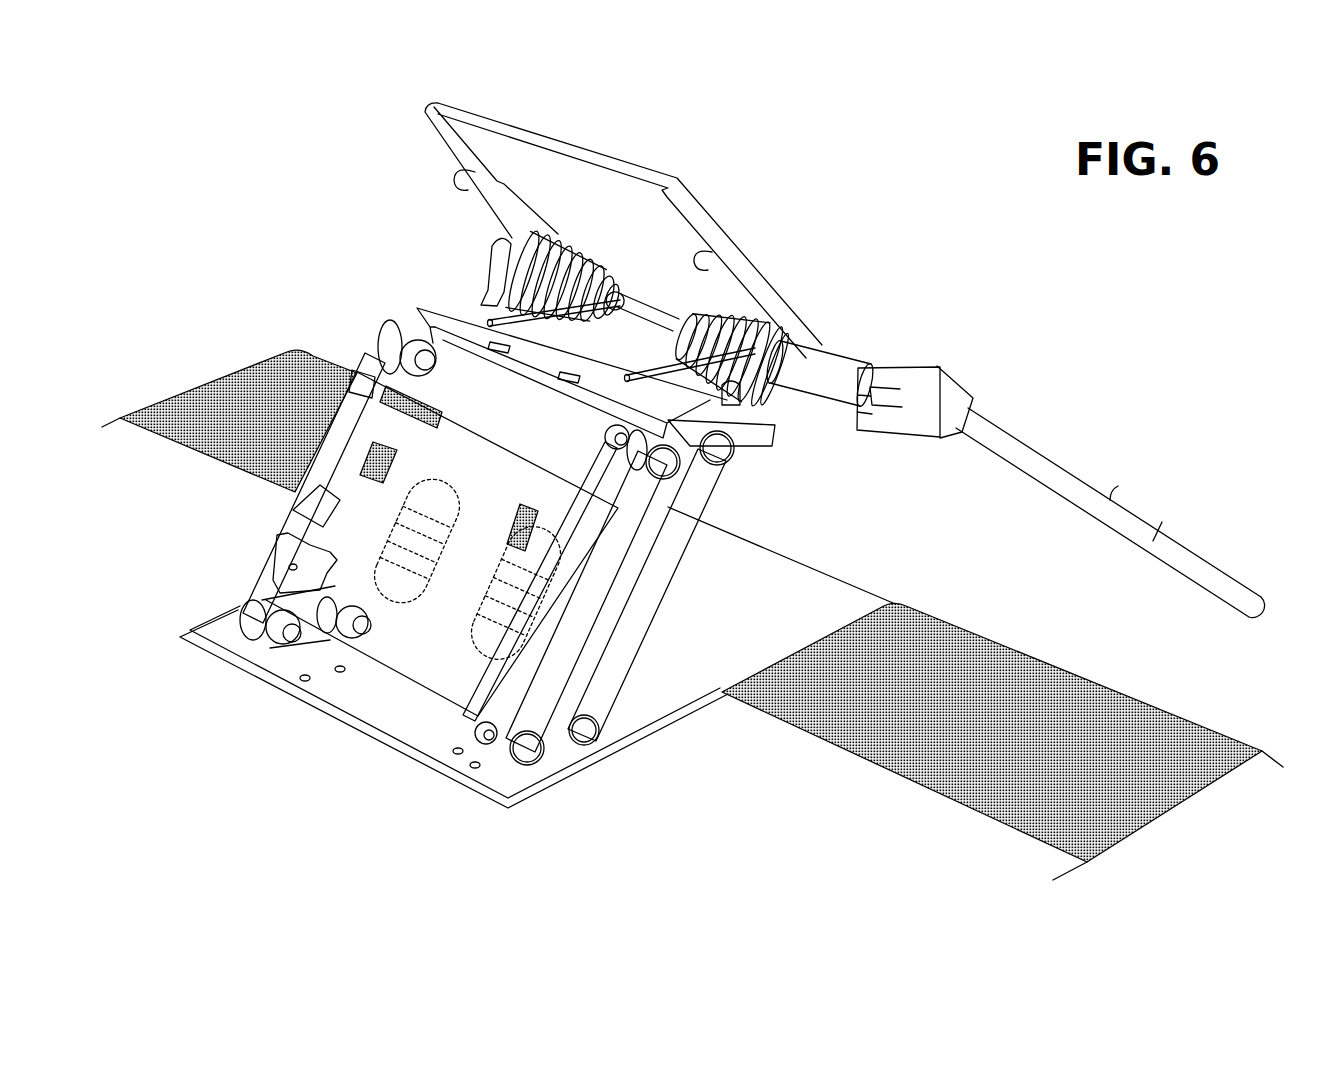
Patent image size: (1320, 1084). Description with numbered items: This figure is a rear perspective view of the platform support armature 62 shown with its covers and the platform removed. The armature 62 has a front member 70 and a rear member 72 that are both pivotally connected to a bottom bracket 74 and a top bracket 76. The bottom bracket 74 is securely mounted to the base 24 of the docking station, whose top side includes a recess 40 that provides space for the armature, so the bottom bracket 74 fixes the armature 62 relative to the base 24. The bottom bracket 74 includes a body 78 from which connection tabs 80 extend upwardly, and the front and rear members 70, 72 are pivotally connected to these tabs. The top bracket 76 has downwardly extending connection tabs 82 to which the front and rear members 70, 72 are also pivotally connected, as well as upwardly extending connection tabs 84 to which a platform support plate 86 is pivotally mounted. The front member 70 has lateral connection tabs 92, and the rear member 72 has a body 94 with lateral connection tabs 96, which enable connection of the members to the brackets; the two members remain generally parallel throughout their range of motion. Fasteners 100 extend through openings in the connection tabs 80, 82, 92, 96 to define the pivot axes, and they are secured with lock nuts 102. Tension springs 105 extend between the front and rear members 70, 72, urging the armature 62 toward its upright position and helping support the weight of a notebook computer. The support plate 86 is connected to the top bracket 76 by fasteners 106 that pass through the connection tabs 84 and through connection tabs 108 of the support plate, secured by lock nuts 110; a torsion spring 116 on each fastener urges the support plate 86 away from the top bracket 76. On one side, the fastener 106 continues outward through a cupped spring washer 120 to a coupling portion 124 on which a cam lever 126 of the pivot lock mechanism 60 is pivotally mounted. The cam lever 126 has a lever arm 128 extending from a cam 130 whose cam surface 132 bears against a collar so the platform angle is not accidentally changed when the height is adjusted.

The base 24 is at (928, 603).
The recess 40 is at (805, 578).
The pivot lock mechanism 60 is at (972, 377).
The platform support armature 62 is at (834, 167).
The front member 70 is at (655, 582).
The rear member 72 is at (261, 533).
The bottom bracket 74 is at (350, 725).
The top bracket 76 is at (551, 398).
The body 78 is at (400, 710).
The connection tabs 80 is at (465, 305).
The connection tabs 82 is at (712, 437).
The connection tabs 84 is at (500, 258).
The platform support plate 86 is at (703, 208).
The lateral connection tabs 92 is at (458, 418).
The body 94 is at (530, 480).
The lateral connection tabs 96 is at (372, 366).
The fasteners 100 is at (372, 334).
The lock nuts 102 is at (410, 322).
The tension springs 105 is at (395, 517).
The fasteners 106 is at (620, 298).
The connection tabs 108 is at (470, 180).
The lock nuts 110 is at (605, 272).
The torsion spring 116 is at (568, 240).
The cupped spring washer 120 is at (790, 330).
The coupling portion 124 is at (850, 352).
The cam lever 126 is at (1062, 446).
The lever arm 128 is at (1118, 486).
The cam 130 is at (885, 352).
The cam surface 132 is at (825, 347).